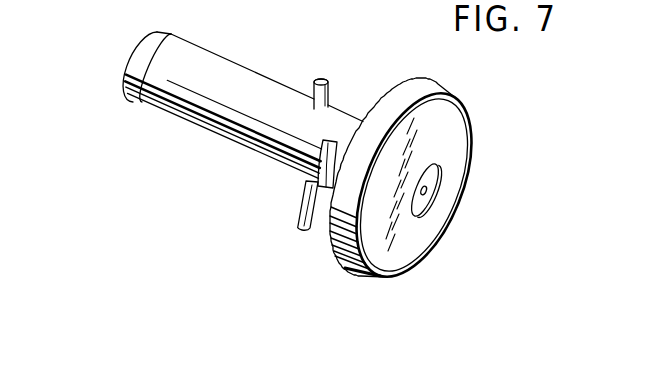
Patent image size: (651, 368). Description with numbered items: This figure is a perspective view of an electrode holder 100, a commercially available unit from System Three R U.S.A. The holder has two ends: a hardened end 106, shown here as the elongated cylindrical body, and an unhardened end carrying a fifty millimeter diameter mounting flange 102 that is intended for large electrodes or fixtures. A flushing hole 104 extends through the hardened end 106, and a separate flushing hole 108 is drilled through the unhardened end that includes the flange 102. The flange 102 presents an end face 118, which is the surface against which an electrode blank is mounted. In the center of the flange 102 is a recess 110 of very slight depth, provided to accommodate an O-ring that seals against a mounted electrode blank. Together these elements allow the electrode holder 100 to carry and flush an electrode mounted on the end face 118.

The electrode holder 100 is at (320, 147).
The mounting flange 102 is at (450, 174).
The flushing hole 104 is at (110, 60).
The hardened end 106 is at (189, 89).
The flushing hole 108 is at (345, 130).
The recess 110 is at (466, 178).
The end face 118 is at (426, 185).